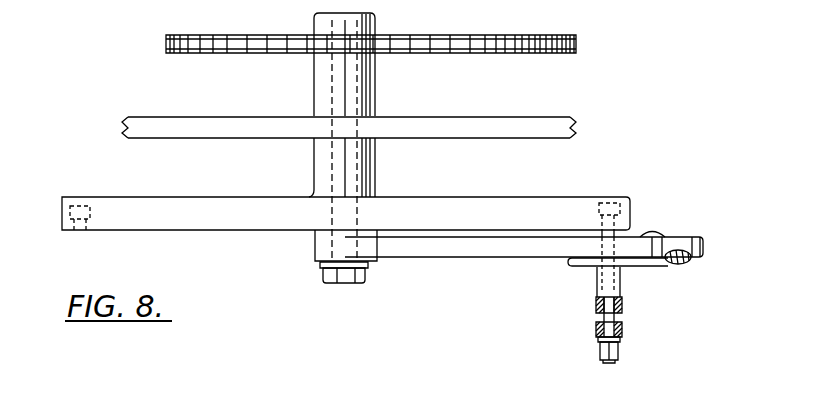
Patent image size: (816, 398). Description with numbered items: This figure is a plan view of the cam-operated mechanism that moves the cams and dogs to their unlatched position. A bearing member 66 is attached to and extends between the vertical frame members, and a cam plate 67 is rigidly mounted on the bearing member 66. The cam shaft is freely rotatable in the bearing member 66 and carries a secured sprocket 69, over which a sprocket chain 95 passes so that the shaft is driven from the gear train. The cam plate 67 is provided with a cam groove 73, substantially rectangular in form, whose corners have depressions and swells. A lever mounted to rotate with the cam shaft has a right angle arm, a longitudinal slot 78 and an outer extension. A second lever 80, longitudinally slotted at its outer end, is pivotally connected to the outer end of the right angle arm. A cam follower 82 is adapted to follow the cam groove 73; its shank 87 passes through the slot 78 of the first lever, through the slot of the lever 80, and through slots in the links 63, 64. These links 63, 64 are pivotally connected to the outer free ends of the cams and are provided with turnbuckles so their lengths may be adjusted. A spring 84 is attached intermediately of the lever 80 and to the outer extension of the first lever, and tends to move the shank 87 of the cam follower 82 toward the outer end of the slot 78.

The sprocket chain 95 is at (256, 37).
The sprocket 69 is at (330, 28).
The bearing member 66 is at (200, 127).
The cam plate 67 is at (185, 213).
The cam groove 73 is at (67, 210).
The cam follower 82 is at (621, 207).
The longitudinal slot 78 is at (435, 249).
The lever 80 is at (568, 262).
The spring 84 is at (690, 262).
The shank 87 is at (613, 318).
The link 64 is at (597, 303).
The link 63 is at (622, 328).